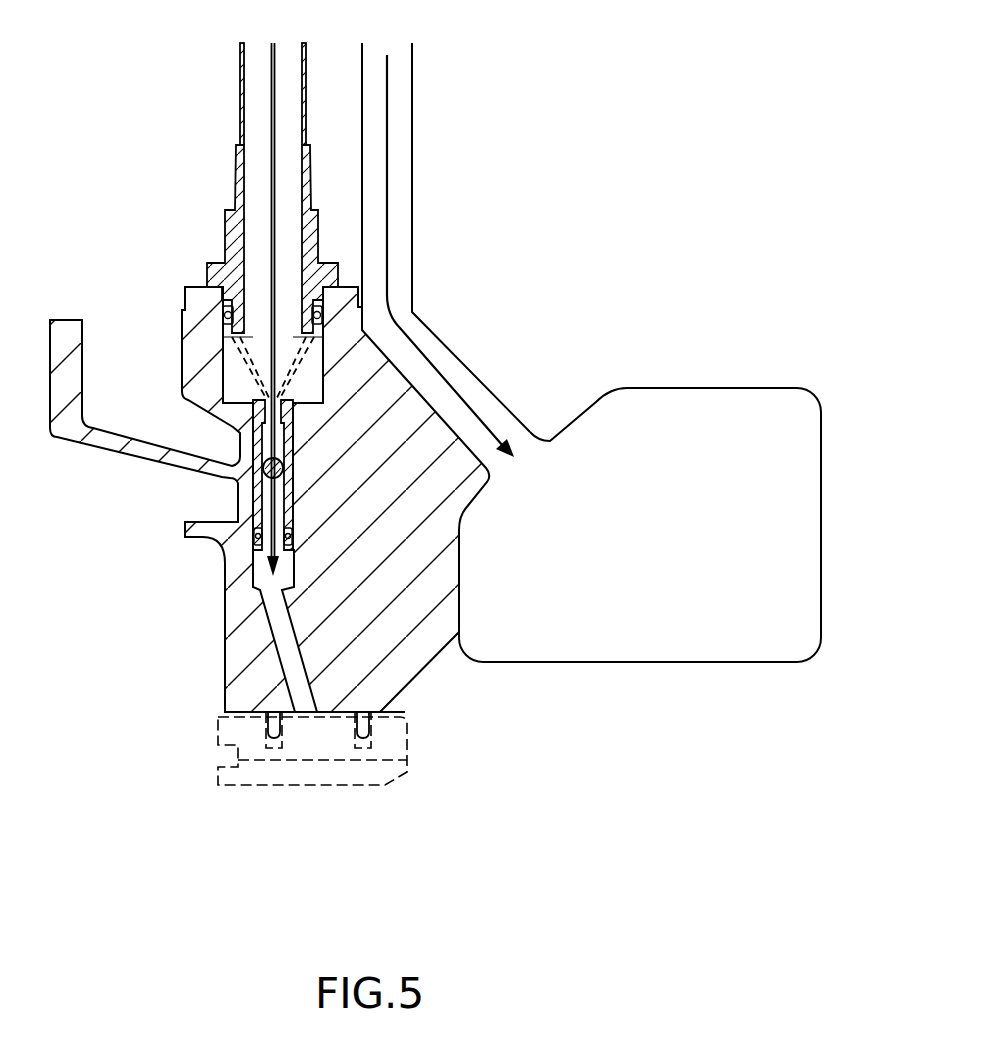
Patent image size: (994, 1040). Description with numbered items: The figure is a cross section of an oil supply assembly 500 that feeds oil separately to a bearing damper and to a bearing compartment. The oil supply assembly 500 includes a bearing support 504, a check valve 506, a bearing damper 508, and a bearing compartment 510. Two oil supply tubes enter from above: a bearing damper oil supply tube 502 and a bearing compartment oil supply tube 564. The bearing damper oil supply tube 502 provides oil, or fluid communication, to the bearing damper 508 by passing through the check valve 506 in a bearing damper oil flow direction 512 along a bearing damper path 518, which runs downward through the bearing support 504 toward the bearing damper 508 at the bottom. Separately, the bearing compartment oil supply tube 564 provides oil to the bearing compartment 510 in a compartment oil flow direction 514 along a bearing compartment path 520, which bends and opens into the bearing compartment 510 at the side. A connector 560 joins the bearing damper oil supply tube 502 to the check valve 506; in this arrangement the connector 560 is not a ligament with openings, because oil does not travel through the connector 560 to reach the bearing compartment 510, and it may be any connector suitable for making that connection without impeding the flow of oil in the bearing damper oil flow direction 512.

The oil supply assembly 500 is at (601, 93).
The bearing damper oil supply tube 502 is at (240, 137).
The bearing support 504 is at (190, 332).
The check valve 506 is at (258, 477).
The bearing damper 508 is at (185, 737).
The bearing compartment 510 is at (633, 640).
The bearing damper oil flow direction 512 is at (275, 522).
The compartment oil flow direction 514 is at (462, 398).
The bearing damper path 518 is at (260, 578).
The bearing compartment path 520 is at (430, 342).
The connector 560 is at (226, 384).
The bearing compartment oil supply tube 564 is at (412, 127).